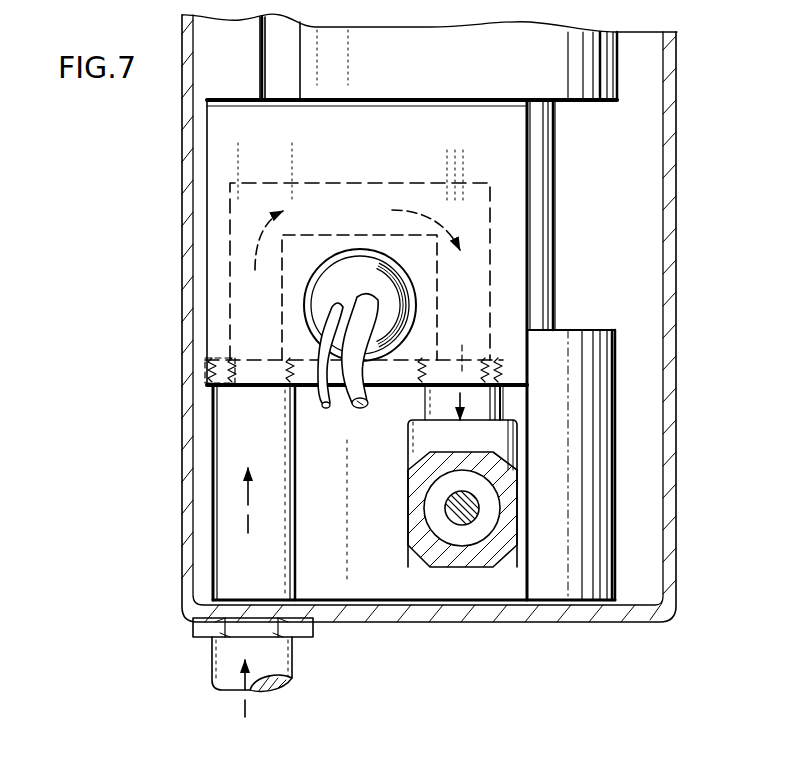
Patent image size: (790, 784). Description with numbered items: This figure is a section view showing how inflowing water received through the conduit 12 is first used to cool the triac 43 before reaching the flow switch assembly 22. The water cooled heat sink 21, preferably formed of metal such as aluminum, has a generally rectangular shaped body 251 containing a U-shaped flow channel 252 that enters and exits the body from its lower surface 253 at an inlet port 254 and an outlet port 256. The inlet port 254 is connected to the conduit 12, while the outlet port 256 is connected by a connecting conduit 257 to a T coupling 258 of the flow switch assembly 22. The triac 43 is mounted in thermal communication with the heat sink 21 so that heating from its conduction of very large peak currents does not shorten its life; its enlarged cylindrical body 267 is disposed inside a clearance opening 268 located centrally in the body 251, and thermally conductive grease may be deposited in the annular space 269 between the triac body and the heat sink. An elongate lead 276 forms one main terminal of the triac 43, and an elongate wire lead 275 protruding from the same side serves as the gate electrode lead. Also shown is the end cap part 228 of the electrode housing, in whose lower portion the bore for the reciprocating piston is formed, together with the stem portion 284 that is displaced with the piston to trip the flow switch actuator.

The water cooled heat sink 21 is at (238, 94).
The body 251 is at (446, 113).
The U-shaped flow channel 252 is at (325, 183).
The triac 43 is at (383, 318).
The inlet port 254 is at (203, 364).
The outlet port 256 is at (487, 366).
The clearance opening 268 is at (380, 257).
The annular space 269 is at (405, 288).
The enlarged cylindrical body 267 is at (405, 318).
The lead 276 is at (370, 393).
The elongate wire lead 275 is at (315, 407).
The flow switch assembly 22 is at (380, 518).
The lower surface 253 is at (514, 392).
The connecting conduit 257 is at (503, 410).
The T coupling 258 is at (540, 488).
The stem portion 284 is at (470, 513).
The end cap part 228 is at (633, 446).
The conduit 12 is at (212, 657).